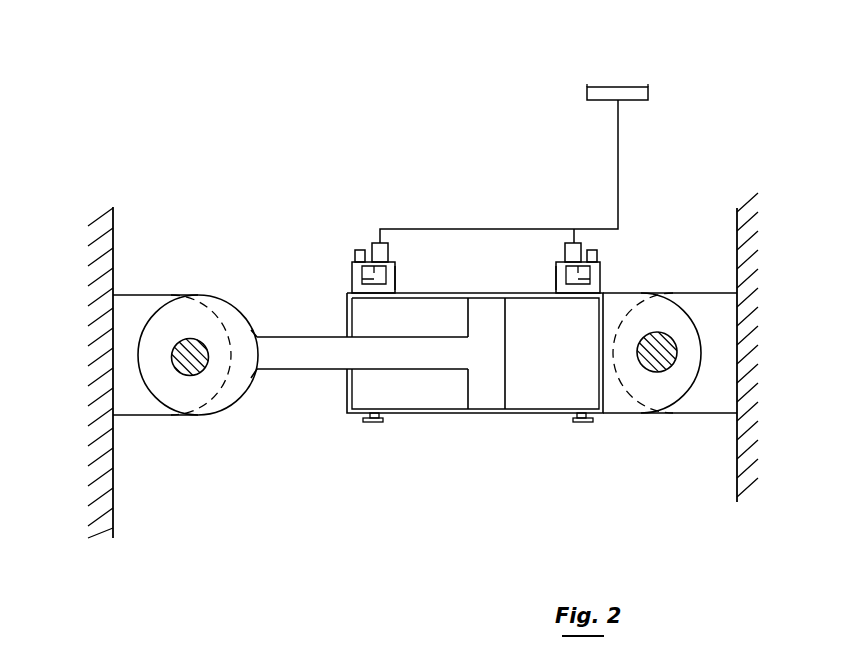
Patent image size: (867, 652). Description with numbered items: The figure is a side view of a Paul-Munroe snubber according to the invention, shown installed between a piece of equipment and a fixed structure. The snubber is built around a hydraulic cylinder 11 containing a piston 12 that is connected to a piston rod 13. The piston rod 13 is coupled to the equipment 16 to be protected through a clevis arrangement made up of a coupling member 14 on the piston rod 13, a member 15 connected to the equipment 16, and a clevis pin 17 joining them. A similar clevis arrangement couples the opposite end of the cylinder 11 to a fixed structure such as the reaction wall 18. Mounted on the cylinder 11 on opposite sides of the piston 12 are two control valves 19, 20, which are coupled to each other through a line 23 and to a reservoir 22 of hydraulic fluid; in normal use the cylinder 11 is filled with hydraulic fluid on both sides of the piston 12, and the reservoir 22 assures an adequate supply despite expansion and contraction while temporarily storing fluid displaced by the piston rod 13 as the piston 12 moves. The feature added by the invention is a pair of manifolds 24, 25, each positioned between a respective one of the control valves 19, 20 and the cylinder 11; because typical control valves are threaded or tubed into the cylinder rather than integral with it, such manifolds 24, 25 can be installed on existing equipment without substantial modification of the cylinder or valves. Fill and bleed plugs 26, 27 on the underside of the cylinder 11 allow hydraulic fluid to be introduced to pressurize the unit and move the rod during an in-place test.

The hydraulic cylinder 11 is at (549, 415).
The piston 12 is at (477, 400).
The piston rod 13 is at (308, 340).
The coupling member 14 is at (233, 393).
The member 15 is at (140, 298).
The equipment 16 is at (113, 214).
The clevis pin 17 is at (191, 370).
The reaction wall 18 is at (737, 458).
The control valve 19 is at (373, 250).
The control valve 20 is at (566, 250).
The reservoir 22 is at (628, 87).
The line 23 is at (460, 229).
The manifold 24 is at (396, 275).
The manifold 25 is at (555, 273).
The fill and bleed plug 26 is at (370, 422).
The fill and bleed plug 27 is at (585, 423).